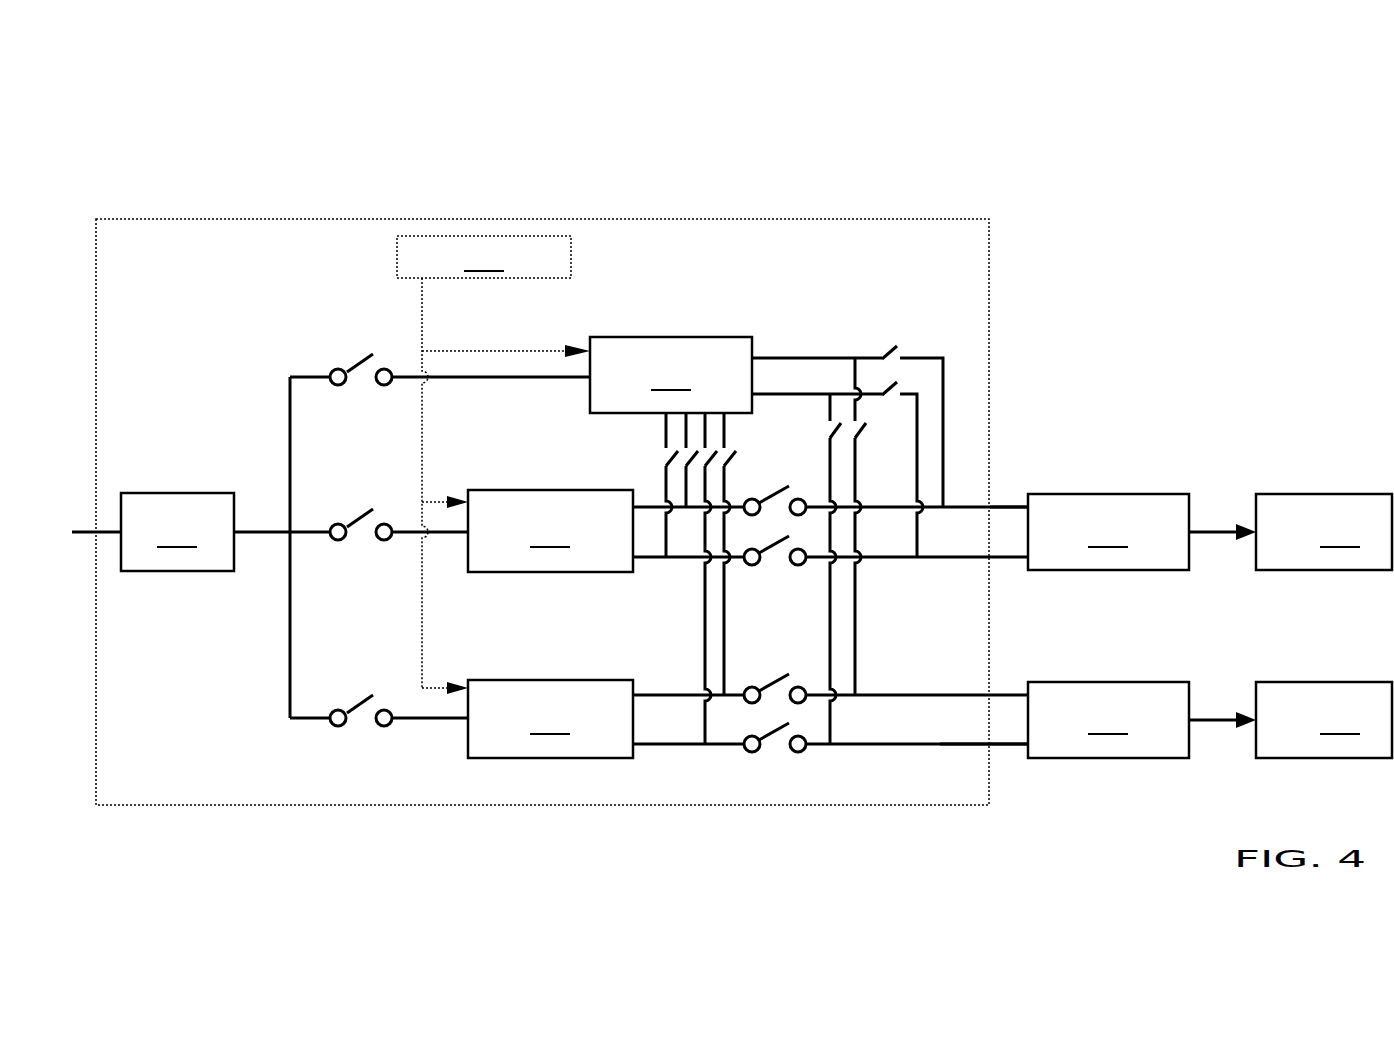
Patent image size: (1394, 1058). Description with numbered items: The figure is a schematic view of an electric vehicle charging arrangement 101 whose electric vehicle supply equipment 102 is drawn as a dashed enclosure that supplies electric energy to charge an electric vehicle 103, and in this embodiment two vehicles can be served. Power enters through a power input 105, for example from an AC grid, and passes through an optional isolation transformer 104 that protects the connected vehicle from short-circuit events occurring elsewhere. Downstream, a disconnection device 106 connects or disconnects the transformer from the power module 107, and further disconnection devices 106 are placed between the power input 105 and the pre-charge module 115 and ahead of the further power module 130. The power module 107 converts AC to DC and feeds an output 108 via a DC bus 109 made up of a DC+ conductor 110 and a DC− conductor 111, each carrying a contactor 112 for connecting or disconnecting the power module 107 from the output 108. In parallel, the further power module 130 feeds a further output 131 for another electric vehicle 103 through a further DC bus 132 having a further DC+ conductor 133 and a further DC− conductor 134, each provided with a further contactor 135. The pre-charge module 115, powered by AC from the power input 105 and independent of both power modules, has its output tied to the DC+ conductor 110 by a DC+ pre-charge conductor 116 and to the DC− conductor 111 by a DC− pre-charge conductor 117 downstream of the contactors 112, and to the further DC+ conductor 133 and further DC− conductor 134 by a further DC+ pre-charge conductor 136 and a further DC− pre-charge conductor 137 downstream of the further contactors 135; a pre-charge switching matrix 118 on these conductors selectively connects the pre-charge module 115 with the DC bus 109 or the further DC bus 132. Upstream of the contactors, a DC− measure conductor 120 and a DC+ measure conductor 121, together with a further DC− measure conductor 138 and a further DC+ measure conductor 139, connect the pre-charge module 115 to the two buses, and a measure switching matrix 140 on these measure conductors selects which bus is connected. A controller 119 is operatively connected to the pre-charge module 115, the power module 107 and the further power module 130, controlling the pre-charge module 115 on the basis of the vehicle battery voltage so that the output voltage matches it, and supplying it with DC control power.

The electric vehicle charging arrangement 101 is at (116, 156).
The electric vehicle supply equipment 102 is at (237, 218).
The electric vehicle 103 is at (1324, 626).
The isolation transformer 104 is at (177, 532).
The power input 105 is at (80, 531).
The disconnection device 106 is at (361, 356).
The power module 107 is at (550, 531).
The output 108 is at (1108, 532).
The DC bus 109 is at (1006, 506).
The DC+ conductor 110 is at (642, 505).
The DC− conductor 111 is at (645, 559).
The contactor 112 is at (779, 490).
The pre-charge module 115 is at (671, 375).
The DC+ pre-charge conductor 116 is at (806, 357).
The DC− pre-charge conductor 117 is at (773, 392).
The pre-charge switching matrix 118 is at (893, 386).
The controller 119 is at (493, 465).
The DC− measure conductor 120 is at (667, 528).
The DC+ measure conductor 121 is at (665, 432).
The further power module 130 is at (550, 719).
The further output 131 is at (1108, 720).
The further DC bus 132 is at (870, 745).
The further DC+ conductor 133 is at (928, 694).
The further DC− conductor 134 is at (951, 746).
The further contactor 135 is at (774, 680).
The further DC+ pre-charge conductor 136 is at (858, 588).
The further DC− pre-charge conductor 137 is at (833, 611).
The further DC− measure conductor 138 is at (723, 656).
The further DC+ measure conductor 139 is at (704, 633).
The measure switching matrix 140 is at (680, 459).